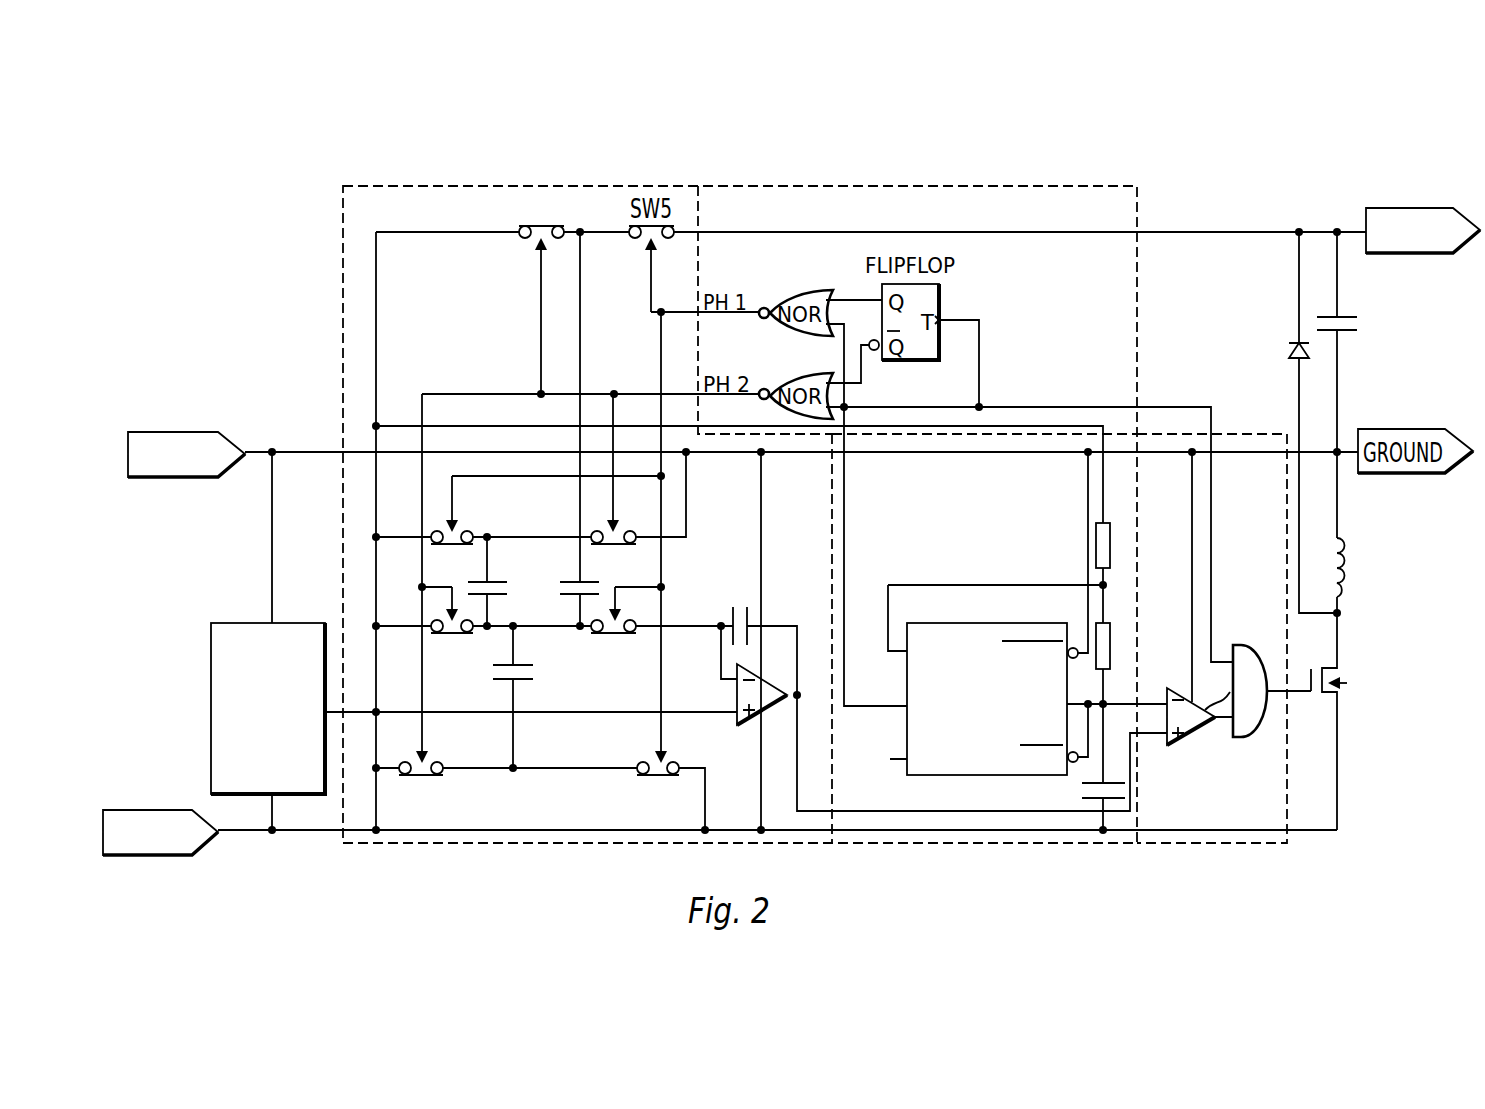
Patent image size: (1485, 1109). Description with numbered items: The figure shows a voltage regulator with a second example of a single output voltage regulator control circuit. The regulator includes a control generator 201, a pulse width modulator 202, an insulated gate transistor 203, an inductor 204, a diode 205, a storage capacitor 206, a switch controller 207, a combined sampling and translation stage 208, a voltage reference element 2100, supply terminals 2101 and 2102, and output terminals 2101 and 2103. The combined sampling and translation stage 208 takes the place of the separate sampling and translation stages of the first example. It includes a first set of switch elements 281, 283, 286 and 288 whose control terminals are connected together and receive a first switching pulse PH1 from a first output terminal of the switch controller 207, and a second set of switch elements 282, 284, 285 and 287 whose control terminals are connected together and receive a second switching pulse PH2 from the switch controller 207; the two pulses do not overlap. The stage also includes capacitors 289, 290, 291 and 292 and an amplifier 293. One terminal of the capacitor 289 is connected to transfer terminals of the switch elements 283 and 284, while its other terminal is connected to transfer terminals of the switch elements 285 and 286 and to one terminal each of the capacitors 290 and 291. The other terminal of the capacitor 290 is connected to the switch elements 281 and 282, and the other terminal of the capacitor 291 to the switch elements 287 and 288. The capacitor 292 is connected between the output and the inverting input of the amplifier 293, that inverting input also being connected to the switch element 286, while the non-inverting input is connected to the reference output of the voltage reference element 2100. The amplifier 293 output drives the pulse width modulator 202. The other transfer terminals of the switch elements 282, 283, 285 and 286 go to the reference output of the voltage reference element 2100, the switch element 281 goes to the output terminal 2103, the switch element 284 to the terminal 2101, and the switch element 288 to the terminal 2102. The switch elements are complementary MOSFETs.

The switch controller 207 is at (1020, 200).
The switch element 281 is at (683, 208).
The combined sampling and translation stage 208 is at (543, 817).
The control generator 201 is at (998, 843).
The pulse width modulator 202 is at (1242, 813).
The switch element 282 is at (518, 220).
The switch element 283 is at (503, 516).
The switch element 284 is at (630, 522).
The switch element 285 is at (425, 625).
The switch element 286 is at (637, 640).
The switch element 287 is at (441, 775).
The switch element 288 is at (634, 781).
The capacitor 289 is at (495, 600).
The capacitor 290 is at (555, 617).
The capacitor 291 is at (497, 690).
The capacitor 292 is at (727, 612).
The amplifier 293 is at (765, 683).
The voltage reference element 2100 is at (218, 695).
The supply terminal 2101 is at (300, 447).
The supply terminal 2102 is at (245, 837).
The output terminal 2103 is at (1377, 212).
The diode 205 is at (1287, 353).
The storage capacitor 206 is at (1357, 323).
The inductor 204 is at (1358, 557).
The insulated gate transistor 203 is at (1341, 667).